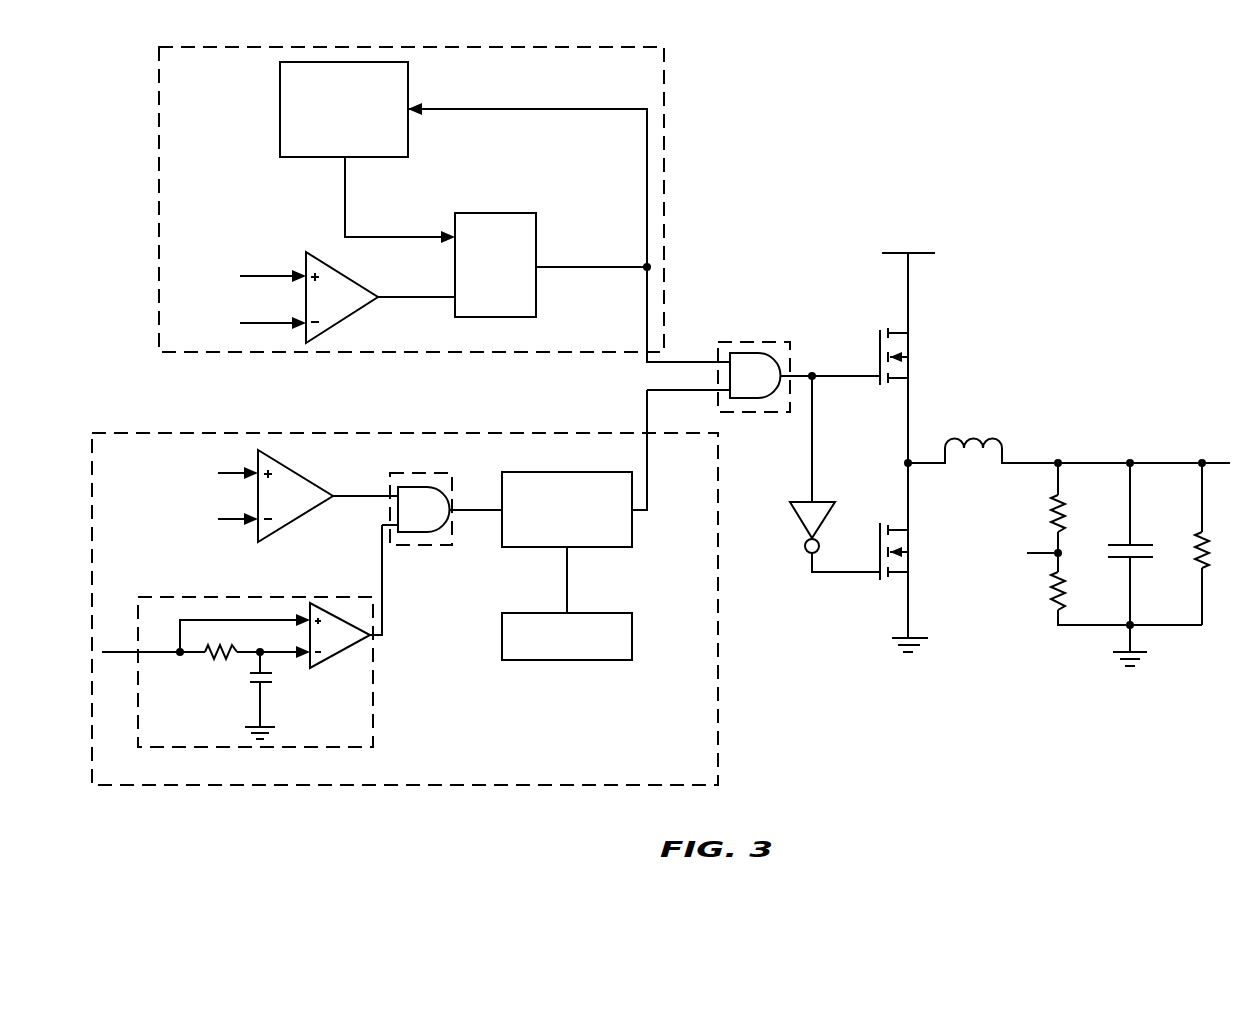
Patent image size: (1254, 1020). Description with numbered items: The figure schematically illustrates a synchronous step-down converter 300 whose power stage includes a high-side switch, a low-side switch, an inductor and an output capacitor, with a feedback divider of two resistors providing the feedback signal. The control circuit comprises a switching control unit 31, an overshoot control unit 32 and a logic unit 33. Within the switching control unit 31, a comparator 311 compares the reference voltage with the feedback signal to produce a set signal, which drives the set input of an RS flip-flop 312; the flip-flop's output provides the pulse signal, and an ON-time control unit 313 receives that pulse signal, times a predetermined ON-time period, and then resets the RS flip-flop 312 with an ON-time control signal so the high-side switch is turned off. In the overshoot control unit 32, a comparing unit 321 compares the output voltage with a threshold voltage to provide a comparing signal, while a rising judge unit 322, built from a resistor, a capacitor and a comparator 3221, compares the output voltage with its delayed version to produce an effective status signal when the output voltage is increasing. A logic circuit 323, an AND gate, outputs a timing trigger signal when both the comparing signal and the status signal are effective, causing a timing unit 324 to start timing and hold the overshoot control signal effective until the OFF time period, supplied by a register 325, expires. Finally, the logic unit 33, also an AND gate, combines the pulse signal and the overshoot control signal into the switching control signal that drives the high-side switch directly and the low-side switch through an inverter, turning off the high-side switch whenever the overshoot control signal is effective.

The step-down converter 300 is at (668, 416).
The switching control unit 31 is at (665, 122).
The comparator 311 is at (305, 254).
The RS flip-flop 312 is at (536, 216).
The ON-time control unit 313 is at (408, 90).
The overshoot control unit 32 is at (720, 668).
The comparing unit 321 is at (264, 540).
The rising judge unit 322 is at (155, 598).
The comparator 3221 is at (314, 660).
The logic circuit 323 is at (420, 546).
The timing unit 324 is at (632, 540).
The register 325 is at (632, 652).
The logic unit 33 is at (760, 343).